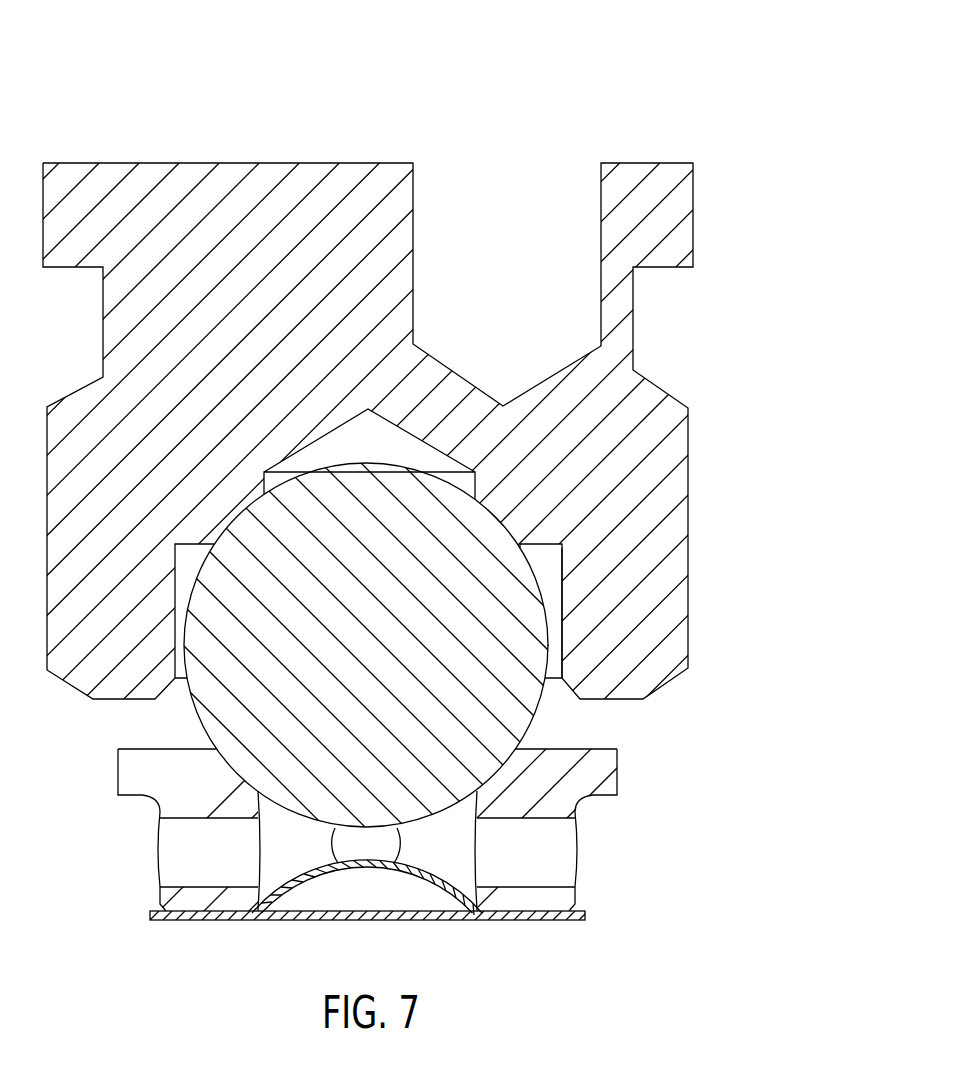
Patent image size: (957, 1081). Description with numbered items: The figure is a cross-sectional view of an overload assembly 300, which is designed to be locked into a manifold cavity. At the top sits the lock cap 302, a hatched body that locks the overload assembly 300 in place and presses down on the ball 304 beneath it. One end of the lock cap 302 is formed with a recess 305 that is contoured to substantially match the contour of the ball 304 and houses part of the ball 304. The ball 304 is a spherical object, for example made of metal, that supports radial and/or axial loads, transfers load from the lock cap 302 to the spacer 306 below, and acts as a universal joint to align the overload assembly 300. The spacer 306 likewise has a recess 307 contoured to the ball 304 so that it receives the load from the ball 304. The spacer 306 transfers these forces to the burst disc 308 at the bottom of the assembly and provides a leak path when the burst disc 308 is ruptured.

The overload assembly 300 is at (645, 65).
The lock cap 302 is at (653, 463).
The ball 304 is at (517, 717).
The recess 305 is at (555, 645).
The spacer 306 is at (580, 770).
The recess 307 is at (490, 782).
The burst disc 308 is at (585, 912).